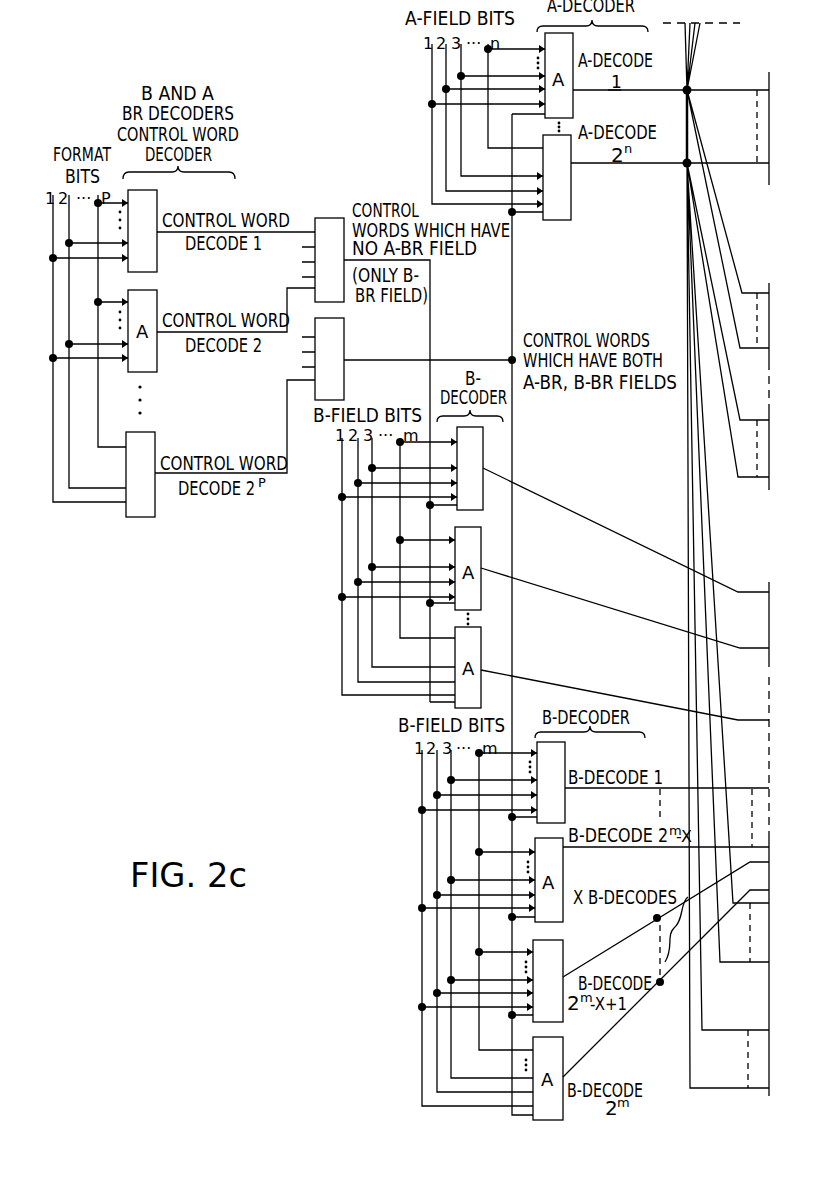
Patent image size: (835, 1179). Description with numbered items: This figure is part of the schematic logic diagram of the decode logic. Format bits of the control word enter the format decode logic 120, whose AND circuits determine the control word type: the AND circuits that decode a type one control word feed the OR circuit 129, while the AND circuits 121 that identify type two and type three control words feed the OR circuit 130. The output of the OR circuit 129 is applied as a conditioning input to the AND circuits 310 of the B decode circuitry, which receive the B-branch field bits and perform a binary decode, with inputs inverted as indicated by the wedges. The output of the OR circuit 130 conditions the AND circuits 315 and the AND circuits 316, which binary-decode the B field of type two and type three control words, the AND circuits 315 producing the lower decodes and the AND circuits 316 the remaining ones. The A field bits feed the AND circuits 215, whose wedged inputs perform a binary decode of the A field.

The format decode logic 120 is at (172, 279).
The AND circuits 121 is at (155, 516).
The OR circuit 129 is at (323, 217).
The OR circuit 130 is at (352, 327).
The AND circuits 215 is at (584, 189).
The AND circuits 310 is at (502, 506).
The AND circuits 315 is at (574, 758).
The AND circuits 316 is at (573, 956).